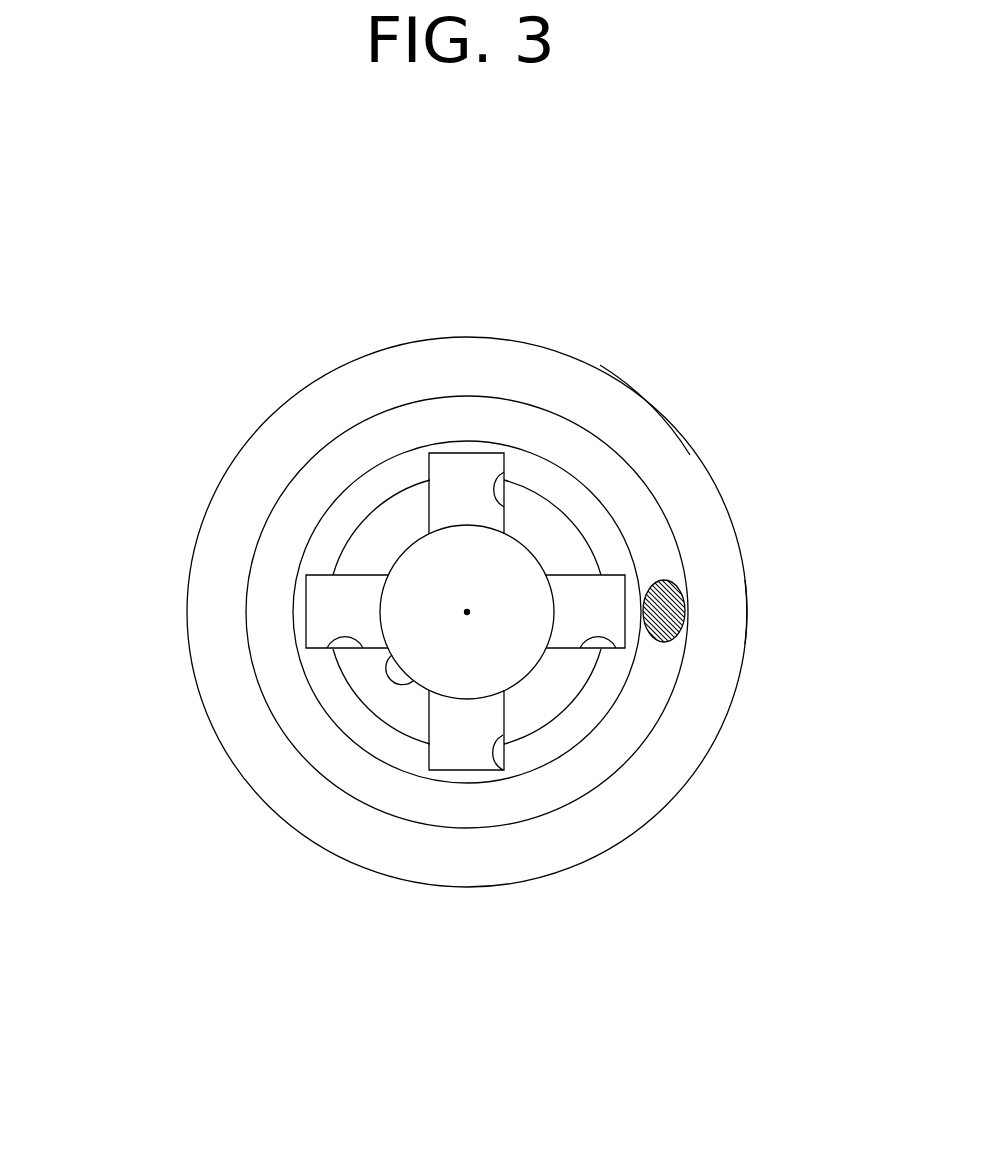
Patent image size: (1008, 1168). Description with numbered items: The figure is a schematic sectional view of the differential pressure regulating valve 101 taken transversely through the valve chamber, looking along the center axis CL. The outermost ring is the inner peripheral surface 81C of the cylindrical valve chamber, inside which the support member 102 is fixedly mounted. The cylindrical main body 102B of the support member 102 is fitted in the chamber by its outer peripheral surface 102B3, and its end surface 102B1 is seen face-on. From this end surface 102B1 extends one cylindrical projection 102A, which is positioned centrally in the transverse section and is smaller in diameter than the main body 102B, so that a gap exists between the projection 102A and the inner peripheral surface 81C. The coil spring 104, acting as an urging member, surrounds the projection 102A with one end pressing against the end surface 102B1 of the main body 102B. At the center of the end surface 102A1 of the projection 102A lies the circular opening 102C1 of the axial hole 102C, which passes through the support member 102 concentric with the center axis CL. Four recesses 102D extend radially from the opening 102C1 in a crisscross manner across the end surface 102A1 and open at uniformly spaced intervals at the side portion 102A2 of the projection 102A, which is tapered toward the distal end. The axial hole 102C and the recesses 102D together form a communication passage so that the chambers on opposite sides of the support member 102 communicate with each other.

The differential pressure regulating valve 101 is at (295, 223).
The support member 102 is at (303, 387).
The cylindrical projection 102A is at (284, 616).
The end surface of the projection 102A1 is at (557, 547).
The side portion of the projection 102A2 is at (600, 703).
The cylindrical main body 102B is at (187, 569).
The end surface of the main body 102B1 is at (659, 435).
The outer peripheral surface 102B3 is at (747, 614).
The axial hole 102C is at (403, 548).
The opening 102C1 is at (423, 680).
The recess 102D is at (503, 507).
The coil spring 104 is at (284, 480).
The inner peripheral surface 81C is at (595, 372).
The center axis CL is at (467, 612).